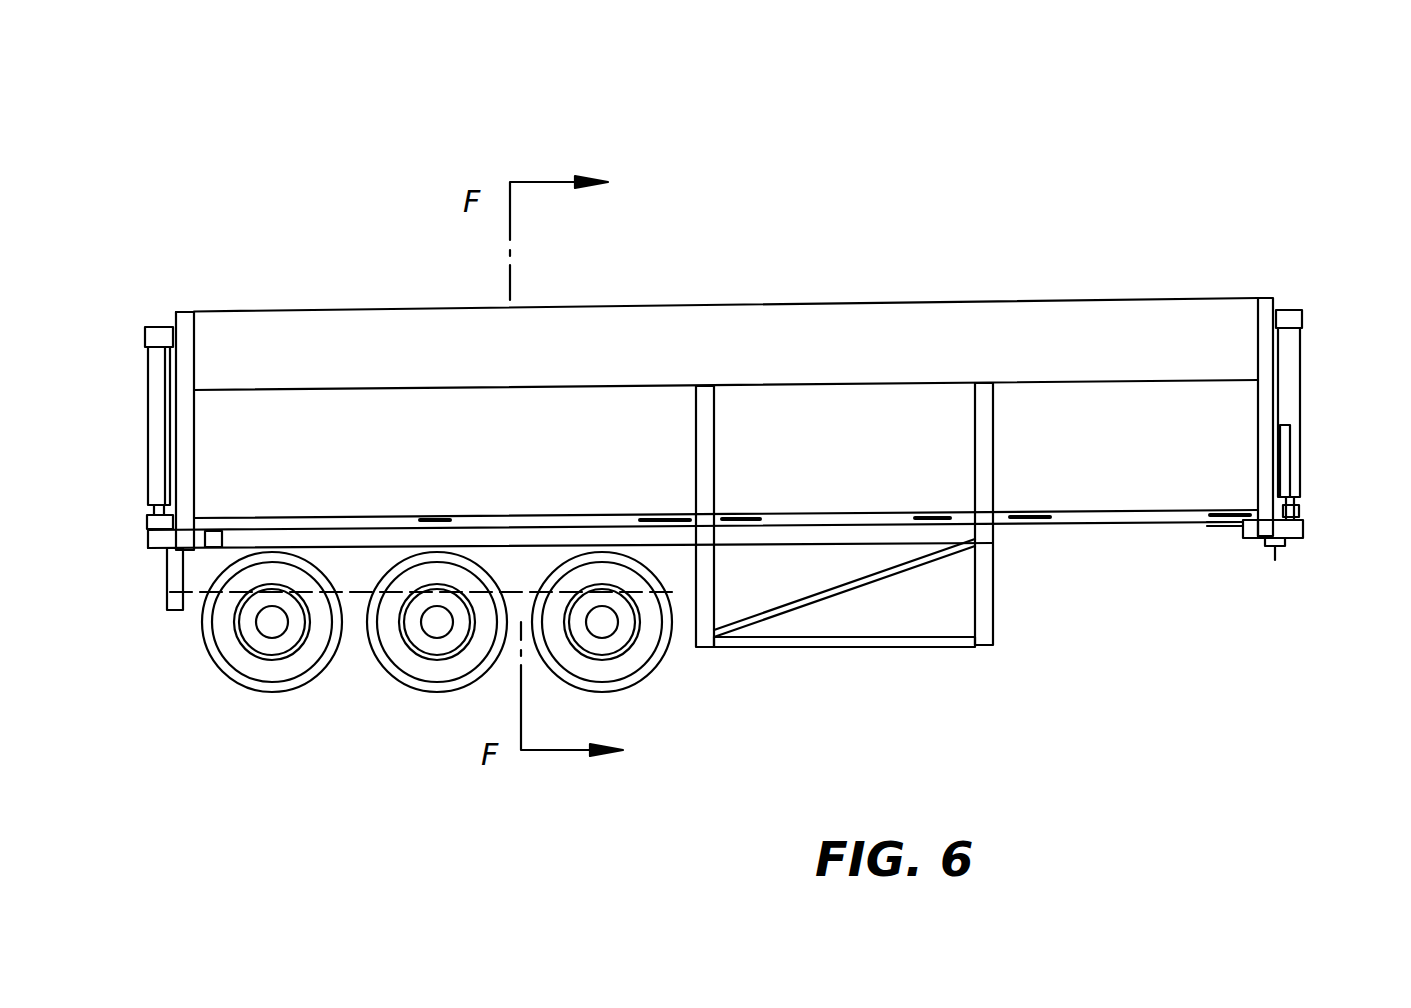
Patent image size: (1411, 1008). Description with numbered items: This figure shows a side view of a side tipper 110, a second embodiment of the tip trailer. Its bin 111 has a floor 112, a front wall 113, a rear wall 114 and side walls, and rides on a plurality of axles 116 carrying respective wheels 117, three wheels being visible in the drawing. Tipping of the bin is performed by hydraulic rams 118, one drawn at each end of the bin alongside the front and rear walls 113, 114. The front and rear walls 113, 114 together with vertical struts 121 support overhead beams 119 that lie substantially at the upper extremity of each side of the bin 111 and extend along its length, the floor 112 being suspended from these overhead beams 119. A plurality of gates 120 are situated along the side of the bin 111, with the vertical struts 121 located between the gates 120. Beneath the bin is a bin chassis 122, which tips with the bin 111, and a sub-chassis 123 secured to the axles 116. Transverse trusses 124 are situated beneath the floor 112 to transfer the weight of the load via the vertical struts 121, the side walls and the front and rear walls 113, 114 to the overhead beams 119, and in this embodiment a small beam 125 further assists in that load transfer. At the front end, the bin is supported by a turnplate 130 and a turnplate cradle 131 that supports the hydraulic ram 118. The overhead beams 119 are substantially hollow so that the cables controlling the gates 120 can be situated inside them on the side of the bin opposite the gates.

The side tipper 110 is at (1082, 236).
The bin 111 is at (458, 463).
The floor 112 is at (553, 513).
The front wall 113 is at (1277, 390).
The rear wall 114 is at (157, 398).
The axles 116 is at (266, 624).
The wheels 117 is at (257, 682).
The hydraulic rams 118 is at (158, 467).
The overhead beams 119 is at (921, 320).
The gates 120 is at (325, 418).
The vertical struts 121 is at (703, 468).
The bin chassis 122 is at (893, 532).
The sub-chassis 123 is at (200, 568).
The transverse trusses 124 is at (717, 600).
The small beam 125 is at (1152, 515).
The turnplate 130 is at (1270, 547).
The turnplate cradle 131 is at (1293, 540).